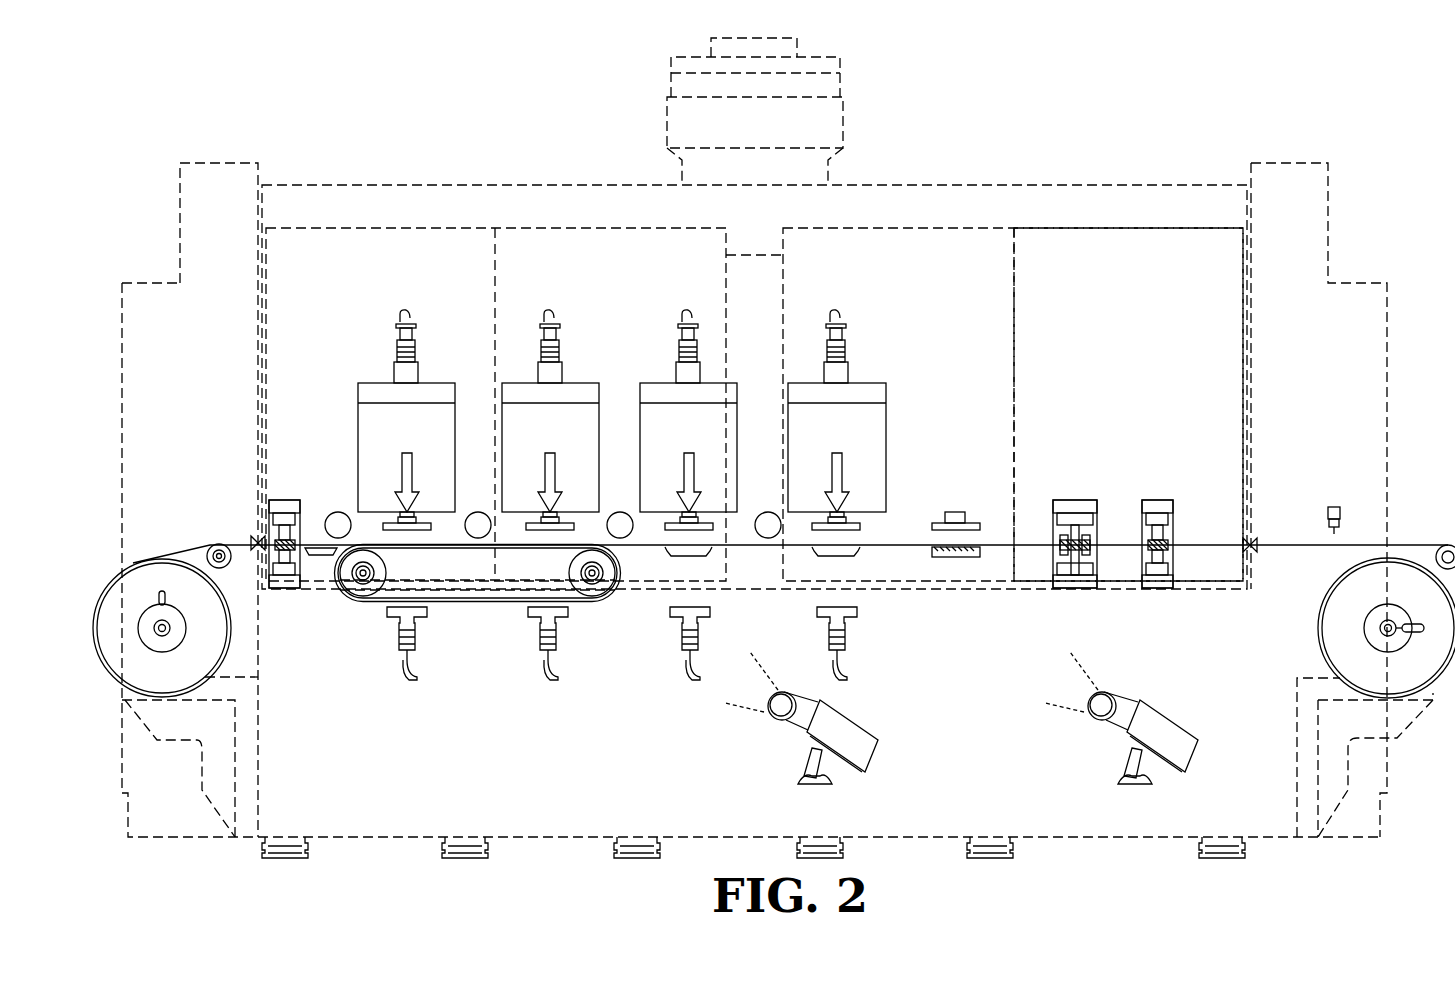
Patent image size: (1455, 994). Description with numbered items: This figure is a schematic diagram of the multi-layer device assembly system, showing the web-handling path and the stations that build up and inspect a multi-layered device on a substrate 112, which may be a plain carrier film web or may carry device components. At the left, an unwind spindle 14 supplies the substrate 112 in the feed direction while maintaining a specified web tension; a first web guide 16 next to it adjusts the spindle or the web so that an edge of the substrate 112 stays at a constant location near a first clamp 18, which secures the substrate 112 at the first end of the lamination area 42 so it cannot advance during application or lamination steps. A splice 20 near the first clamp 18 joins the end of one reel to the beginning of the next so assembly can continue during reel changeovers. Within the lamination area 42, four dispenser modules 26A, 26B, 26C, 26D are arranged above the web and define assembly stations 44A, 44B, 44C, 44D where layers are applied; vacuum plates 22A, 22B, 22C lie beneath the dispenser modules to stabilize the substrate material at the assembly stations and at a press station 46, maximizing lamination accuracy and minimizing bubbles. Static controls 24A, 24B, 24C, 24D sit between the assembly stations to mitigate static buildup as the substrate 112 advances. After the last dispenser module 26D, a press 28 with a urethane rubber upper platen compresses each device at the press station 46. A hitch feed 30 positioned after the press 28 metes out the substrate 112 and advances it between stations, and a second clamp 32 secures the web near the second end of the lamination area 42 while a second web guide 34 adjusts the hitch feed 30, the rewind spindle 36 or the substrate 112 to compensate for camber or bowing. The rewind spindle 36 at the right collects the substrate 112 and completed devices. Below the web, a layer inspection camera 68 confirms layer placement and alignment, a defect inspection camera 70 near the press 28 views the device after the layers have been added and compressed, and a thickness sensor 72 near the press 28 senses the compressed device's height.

The unwind spindle 14 is at (218, 646).
The first web guide 16 is at (256, 538).
The first clamp 18 is at (285, 508).
The splice 20 is at (320, 557).
The vacuum plate 22A is at (477, 553).
The vacuum plate 22B is at (686, 553).
The vacuum plate 22C is at (835, 553).
The static control 24A is at (337, 512).
The static control 24B is at (478, 512).
The static control 24C is at (620, 512).
The static control 24D is at (768, 512).
The dispenser module 26A is at (382, 417).
The dispenser module 26B is at (523, 418).
The dispenser module 26C is at (660, 418).
The dispenser module 26D is at (808, 418).
The press 28 is at (954, 510).
The hitch feed 30 is at (1074, 508).
The second clamp 32 is at (1160, 510).
The second web guide 34 is at (1257, 540).
The rewind spindle 36 is at (1324, 648).
The lamination area 42 is at (1093, 383).
The assembly station 44A is at (372, 514).
The assembly station 44B is at (583, 514).
The assembly station 44C is at (652, 514).
The assembly station 44D is at (873, 514).
The press station 46 is at (947, 563).
The layer inspection camera 68 is at (847, 732).
The defect inspection camera 70 is at (1167, 732).
The thickness sensor 72 is at (1334, 505).
The substrate 112 is at (190, 548).